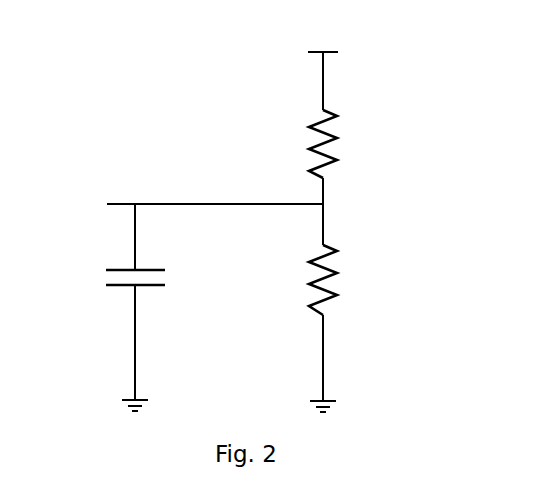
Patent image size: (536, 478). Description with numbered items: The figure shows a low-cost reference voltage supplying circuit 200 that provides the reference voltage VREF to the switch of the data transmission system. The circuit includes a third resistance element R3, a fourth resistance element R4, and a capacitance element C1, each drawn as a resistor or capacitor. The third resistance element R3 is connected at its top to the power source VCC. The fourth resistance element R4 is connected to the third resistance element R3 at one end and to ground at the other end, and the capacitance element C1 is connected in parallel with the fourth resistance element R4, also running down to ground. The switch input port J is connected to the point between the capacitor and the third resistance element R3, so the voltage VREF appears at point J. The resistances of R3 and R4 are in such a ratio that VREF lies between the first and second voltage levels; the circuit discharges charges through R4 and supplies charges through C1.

The reference voltage supplying circuit 200 is at (157, 56).
The power source VCC is at (321, 39).
The third resistance element R3 is at (349, 144).
The fourth resistance element R4 is at (354, 280).
The capacitance element C1 is at (157, 283).
The reference voltage VREF is at (141, 190).
The switch input port J is at (117, 215).